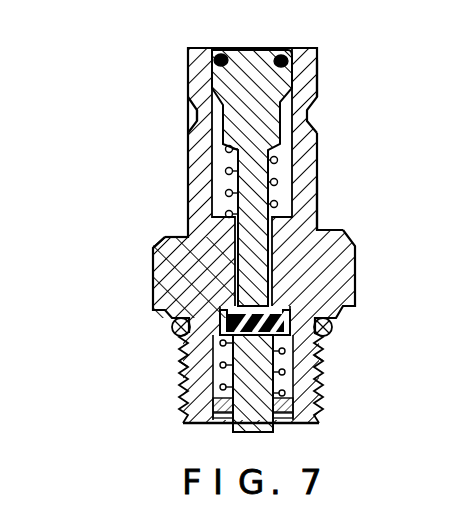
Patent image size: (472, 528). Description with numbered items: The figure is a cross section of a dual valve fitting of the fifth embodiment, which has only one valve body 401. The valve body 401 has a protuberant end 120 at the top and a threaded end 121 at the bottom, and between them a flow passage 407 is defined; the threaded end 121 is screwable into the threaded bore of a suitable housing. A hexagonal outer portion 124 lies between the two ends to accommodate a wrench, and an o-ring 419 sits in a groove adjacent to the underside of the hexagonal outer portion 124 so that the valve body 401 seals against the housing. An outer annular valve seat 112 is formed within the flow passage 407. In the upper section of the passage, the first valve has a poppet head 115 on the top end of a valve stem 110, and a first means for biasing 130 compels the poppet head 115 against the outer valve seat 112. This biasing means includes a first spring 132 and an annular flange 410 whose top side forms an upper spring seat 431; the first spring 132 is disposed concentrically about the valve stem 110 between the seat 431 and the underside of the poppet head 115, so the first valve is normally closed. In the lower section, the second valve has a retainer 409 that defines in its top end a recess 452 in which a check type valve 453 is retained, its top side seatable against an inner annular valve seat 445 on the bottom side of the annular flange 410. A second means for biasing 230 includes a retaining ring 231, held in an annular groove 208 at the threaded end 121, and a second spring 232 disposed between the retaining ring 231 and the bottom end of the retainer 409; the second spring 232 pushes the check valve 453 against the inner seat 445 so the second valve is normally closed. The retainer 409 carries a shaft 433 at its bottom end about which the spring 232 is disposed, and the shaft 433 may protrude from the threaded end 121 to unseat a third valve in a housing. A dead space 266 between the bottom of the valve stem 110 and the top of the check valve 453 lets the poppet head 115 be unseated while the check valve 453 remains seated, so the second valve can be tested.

The poppet head 115 is at (237, 19).
The outer annular valve seat 112 is at (282, 72).
The protuberant end 120 is at (188, 64).
The flow passage 407 is at (197, 116).
The first means for biasing 130 is at (220, 162).
The annular flange 410 is at (189, 203).
The dead space 266 is at (205, 237).
The inner annular valve seat 445 is at (180, 262).
The hexagonal outer portion 124 is at (156, 282).
The retainer 409 is at (175, 335).
The threaded end 121 is at (183, 360).
The shaft 433 is at (183, 378).
The second means for biasing 230 is at (213, 403).
The retaining ring 231 is at (213, 417).
The valve body 401 is at (317, 60).
The valve stem 110 is at (308, 90).
The first spring 132 is at (278, 160).
The upper spring seat 431 is at (313, 203).
The recess 452 is at (288, 318).
The o-ring 419 is at (332, 328).
The check type valve 453 is at (292, 338).
The second spring 232 is at (285, 390).
The annular groove 208 is at (290, 426).